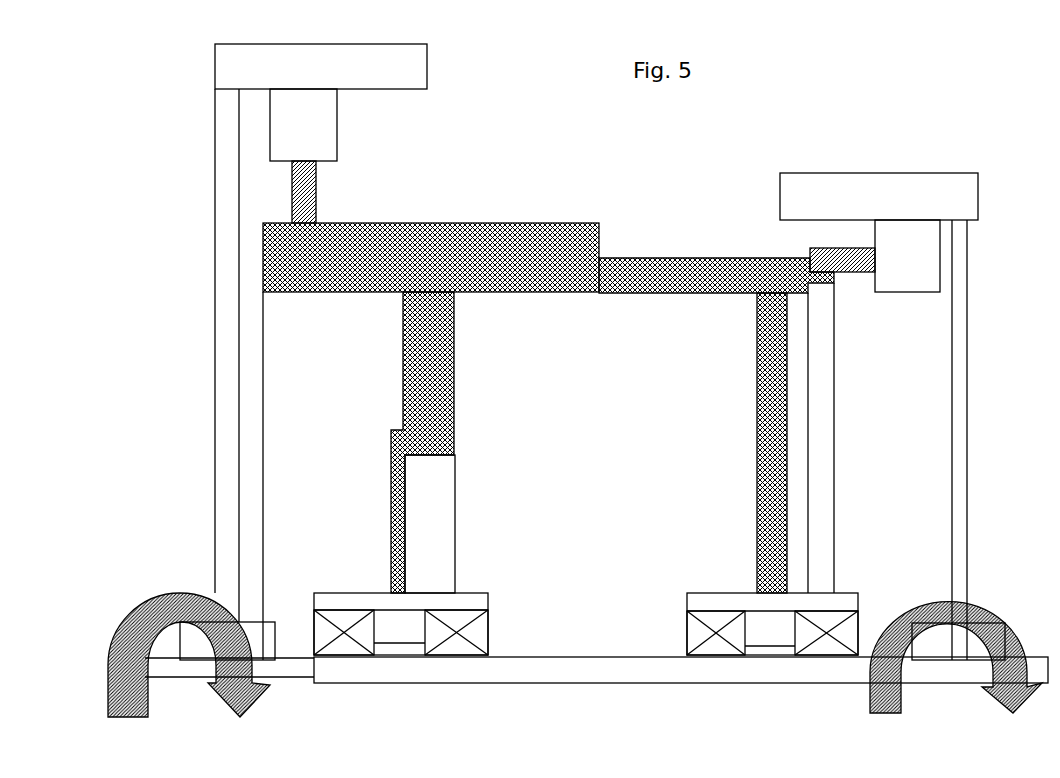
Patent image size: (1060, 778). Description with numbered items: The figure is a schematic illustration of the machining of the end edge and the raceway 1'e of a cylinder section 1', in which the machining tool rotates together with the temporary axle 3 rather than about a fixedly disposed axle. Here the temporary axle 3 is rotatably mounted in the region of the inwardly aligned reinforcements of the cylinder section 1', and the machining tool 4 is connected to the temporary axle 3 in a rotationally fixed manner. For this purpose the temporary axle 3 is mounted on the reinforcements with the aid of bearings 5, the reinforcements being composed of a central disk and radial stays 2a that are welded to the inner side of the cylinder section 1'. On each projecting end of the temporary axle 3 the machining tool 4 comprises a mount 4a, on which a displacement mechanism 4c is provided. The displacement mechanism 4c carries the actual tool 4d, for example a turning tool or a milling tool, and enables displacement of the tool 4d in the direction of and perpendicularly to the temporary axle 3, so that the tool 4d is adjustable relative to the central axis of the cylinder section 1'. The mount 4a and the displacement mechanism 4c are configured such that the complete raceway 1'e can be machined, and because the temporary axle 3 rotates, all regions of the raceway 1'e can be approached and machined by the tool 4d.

The cylinder section 1' is at (716, 396).
The raceway 1'e is at (431, 417).
The radial stay 2a is at (405, 497).
The temporary axle 3 is at (577, 655).
The machining tool 4 is at (170, 214).
The mount 4a is at (225, 298).
The displacement mechanism 4c is at (318, 128).
The tool 4d is at (318, 193).
The bearing 5 is at (342, 613).